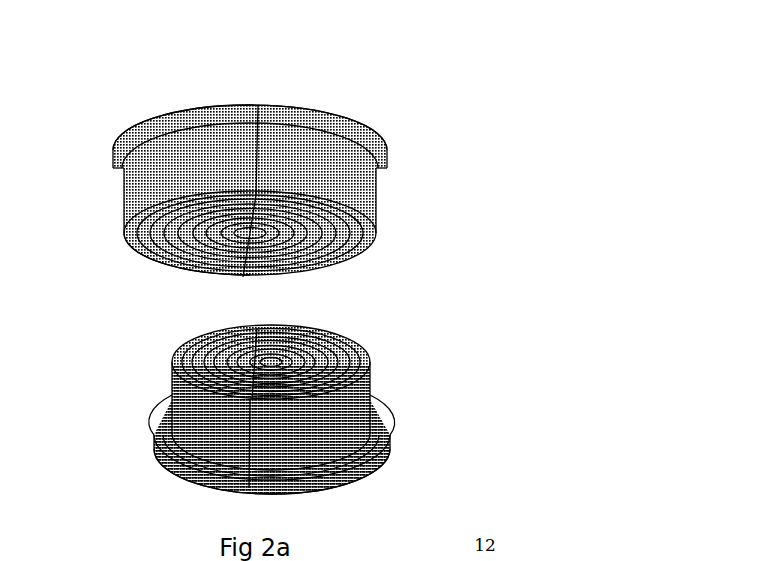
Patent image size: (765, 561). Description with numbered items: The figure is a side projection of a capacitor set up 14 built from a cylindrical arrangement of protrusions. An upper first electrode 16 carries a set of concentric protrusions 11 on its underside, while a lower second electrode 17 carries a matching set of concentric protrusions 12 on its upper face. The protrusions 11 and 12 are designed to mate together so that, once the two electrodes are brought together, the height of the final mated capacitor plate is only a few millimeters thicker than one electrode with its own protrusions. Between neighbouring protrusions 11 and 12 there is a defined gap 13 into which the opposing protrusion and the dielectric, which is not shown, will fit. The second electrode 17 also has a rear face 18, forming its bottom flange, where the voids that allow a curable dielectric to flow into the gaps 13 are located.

The protrusions 11 is at (328, 233).
The protrusions 12 is at (322, 370).
The gap 13 is at (137, 230).
The capacitor set up 14 is at (401, 111).
The first electrode 16 is at (388, 147).
The second electrode 17 is at (367, 432).
The rear face 18 is at (205, 487).